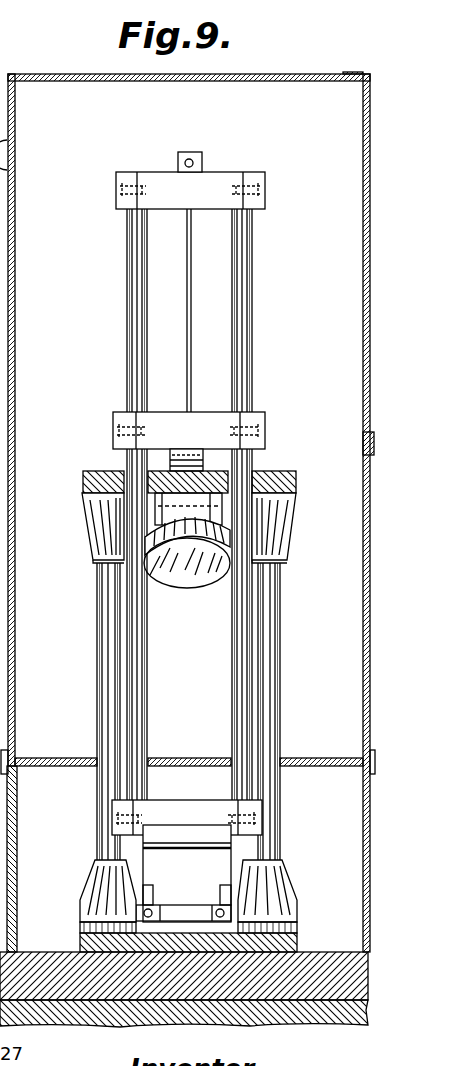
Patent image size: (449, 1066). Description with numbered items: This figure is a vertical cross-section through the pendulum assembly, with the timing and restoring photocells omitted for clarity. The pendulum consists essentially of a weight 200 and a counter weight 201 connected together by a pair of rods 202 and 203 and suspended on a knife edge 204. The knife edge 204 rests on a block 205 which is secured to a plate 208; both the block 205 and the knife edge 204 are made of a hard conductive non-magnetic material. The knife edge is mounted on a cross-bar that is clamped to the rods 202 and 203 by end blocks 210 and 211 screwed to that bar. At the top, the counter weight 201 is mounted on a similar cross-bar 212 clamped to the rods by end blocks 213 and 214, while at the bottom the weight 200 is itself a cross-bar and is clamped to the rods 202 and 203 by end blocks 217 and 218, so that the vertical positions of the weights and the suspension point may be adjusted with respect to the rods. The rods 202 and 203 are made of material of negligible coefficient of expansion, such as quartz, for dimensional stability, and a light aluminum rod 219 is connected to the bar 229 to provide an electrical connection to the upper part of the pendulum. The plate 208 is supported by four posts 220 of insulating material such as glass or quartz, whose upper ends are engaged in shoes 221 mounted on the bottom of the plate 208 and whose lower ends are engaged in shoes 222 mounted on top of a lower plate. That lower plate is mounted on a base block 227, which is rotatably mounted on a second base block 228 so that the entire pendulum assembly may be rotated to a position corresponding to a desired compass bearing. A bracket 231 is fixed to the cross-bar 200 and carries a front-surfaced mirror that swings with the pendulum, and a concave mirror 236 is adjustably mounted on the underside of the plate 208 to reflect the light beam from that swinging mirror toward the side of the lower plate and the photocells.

The weight 200 is at (180, 808).
The counter weight 201 is at (197, 156).
The rod 202 is at (132, 328).
The rod 203 is at (243, 298).
The knife edge 204 is at (205, 460).
The block 205 is at (205, 467).
The plate 208 is at (100, 465).
The end block 210 is at (120, 420).
The end block 211 is at (250, 415).
The cross-bar 212 is at (162, 183).
The end block 213 is at (123, 198).
The end block 214 is at (256, 180).
The end block 217 is at (250, 808).
The end block 218 is at (125, 805).
The aluminum rod 219 is at (190, 278).
The post 220 is at (105, 667).
The shoe 221 is at (103, 528).
The shoe 222 is at (92, 888).
The base block 227 is at (197, 996).
The second base block 228 is at (110, 1012).
The bar 229 is at (205, 420).
The bracket 231 is at (205, 868).
The concave mirror 236 is at (195, 580).